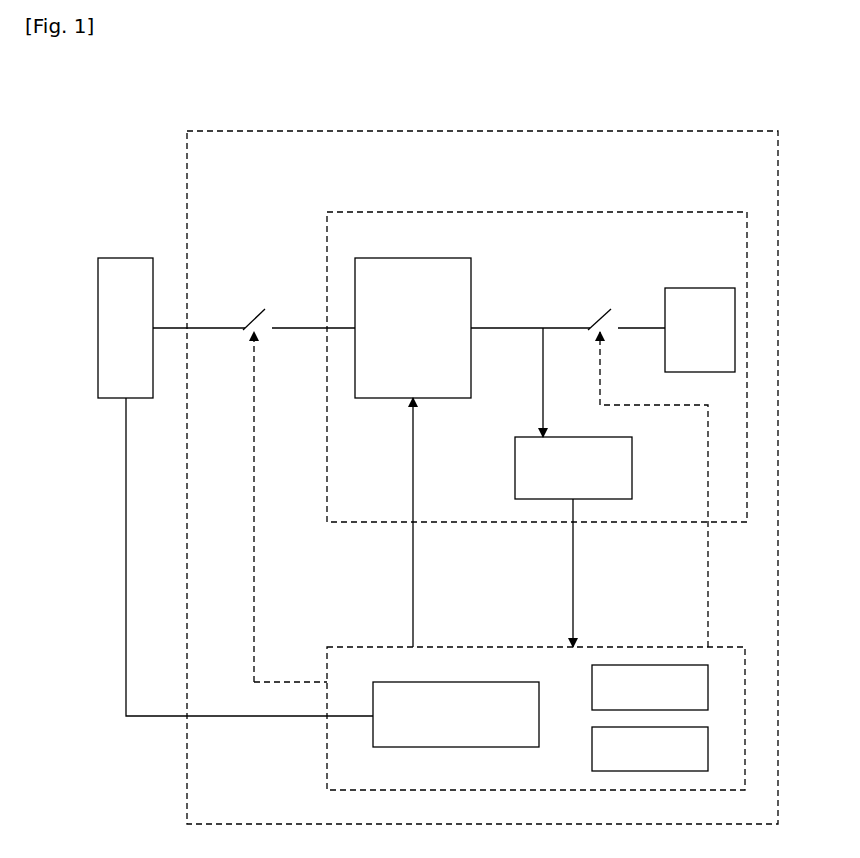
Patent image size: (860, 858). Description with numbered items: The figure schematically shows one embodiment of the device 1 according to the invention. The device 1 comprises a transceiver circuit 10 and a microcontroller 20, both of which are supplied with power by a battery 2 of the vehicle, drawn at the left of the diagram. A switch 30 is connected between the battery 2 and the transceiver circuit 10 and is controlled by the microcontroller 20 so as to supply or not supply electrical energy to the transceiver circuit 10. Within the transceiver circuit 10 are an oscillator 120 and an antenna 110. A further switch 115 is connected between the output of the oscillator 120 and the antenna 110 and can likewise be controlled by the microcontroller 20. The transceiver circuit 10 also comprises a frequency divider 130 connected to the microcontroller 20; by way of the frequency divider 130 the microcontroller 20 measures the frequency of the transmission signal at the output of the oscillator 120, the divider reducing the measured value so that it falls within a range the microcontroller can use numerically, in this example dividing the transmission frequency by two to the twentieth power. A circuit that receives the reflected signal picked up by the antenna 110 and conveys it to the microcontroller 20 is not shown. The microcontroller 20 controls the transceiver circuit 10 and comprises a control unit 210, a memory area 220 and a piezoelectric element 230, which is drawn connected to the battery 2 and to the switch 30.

The device 1 is at (360, 131).
The battery 2 is at (125, 328).
The transceiver circuit 10 is at (530, 212).
The microcontroller 20 is at (665, 647).
The switch 30 is at (254, 314).
The antenna 110 is at (700, 330).
The switch 115 is at (600, 316).
The oscillator 120 is at (413, 328).
The frequency divider 130 is at (573, 468).
The control unit 210 is at (650, 749).
The memory area 220 is at (650, 687).
The piezoelectric element 230 is at (456, 714).